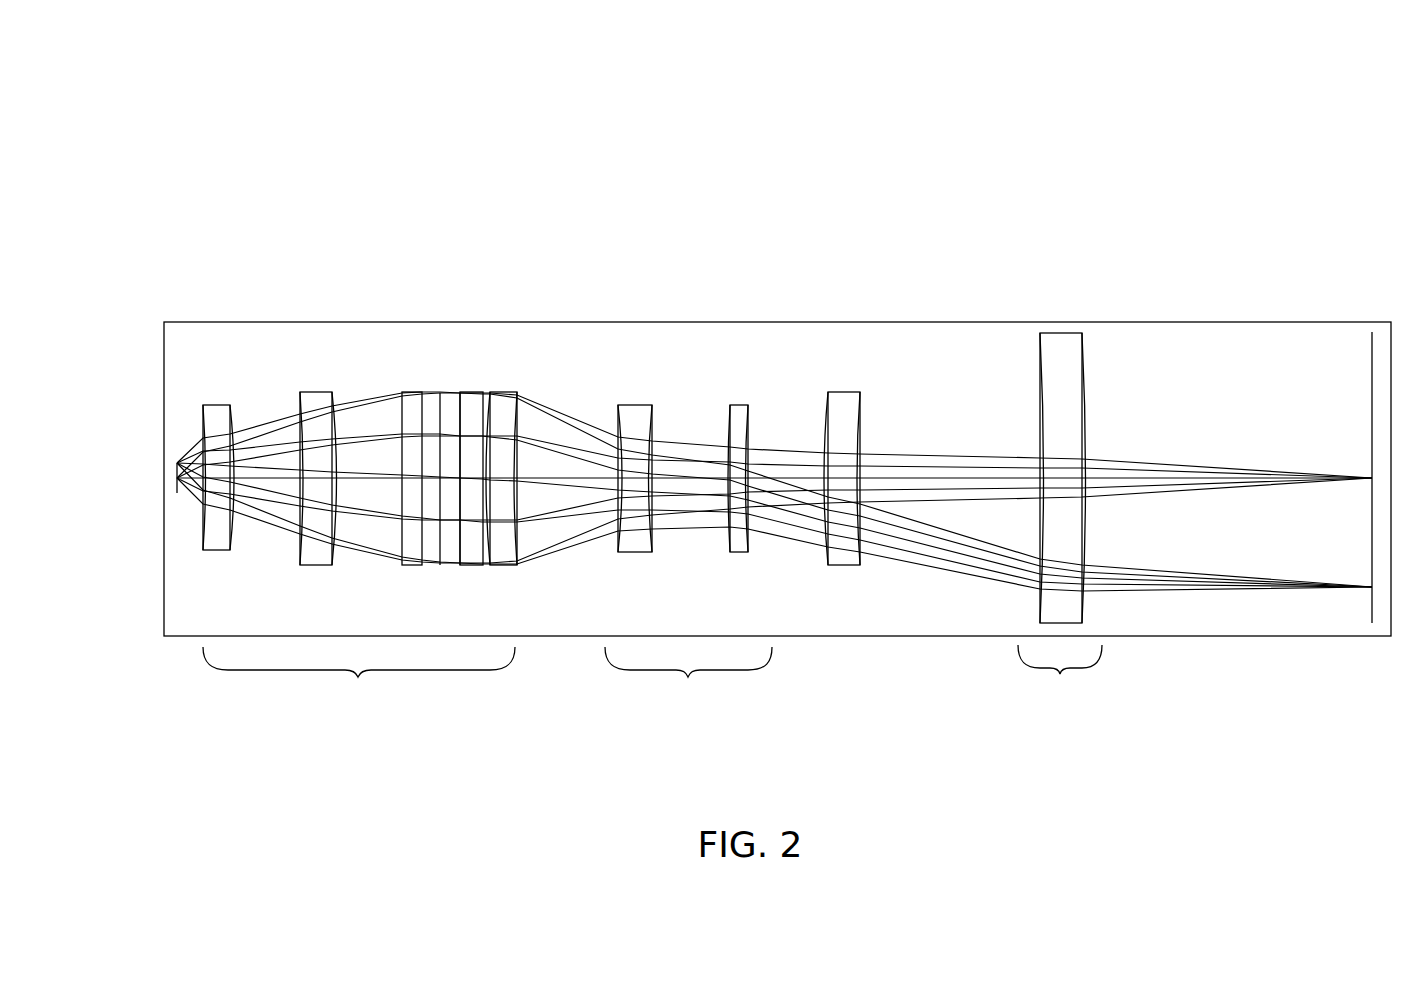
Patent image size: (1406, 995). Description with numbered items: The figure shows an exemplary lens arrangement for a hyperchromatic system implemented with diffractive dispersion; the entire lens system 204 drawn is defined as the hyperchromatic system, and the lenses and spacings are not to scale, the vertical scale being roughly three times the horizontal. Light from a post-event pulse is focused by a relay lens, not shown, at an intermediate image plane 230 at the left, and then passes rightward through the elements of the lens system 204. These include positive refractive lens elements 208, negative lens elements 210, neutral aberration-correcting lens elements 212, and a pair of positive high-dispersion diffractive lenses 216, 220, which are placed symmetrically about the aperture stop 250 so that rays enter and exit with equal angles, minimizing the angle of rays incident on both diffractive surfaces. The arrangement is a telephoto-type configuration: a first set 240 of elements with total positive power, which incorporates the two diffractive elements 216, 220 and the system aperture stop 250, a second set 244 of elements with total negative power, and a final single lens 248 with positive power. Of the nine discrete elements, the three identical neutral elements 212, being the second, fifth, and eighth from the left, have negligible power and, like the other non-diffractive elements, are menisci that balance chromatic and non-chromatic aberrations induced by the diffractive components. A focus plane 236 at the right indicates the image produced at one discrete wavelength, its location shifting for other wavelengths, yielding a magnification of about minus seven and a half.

The lens system 204 is at (658, 143).
The positive refractive lens elements 208 is at (216, 405).
The negative lens elements 210 is at (635, 405).
The neutral aberration-correcting lens elements 212 is at (313, 392).
The positive high-dispersion diffractive lens 216 is at (410, 392).
The positive high-dispersion diffractive lens 220 is at (472, 393).
The intermediate image plane 230 is at (182, 540).
The focus plane 236 is at (1368, 612).
The first set of optical elements 240 is at (359, 677).
The second set of elements 244 is at (688, 677).
The final single lens 248 is at (1060, 676).
The aperture stop 250 is at (441, 393).